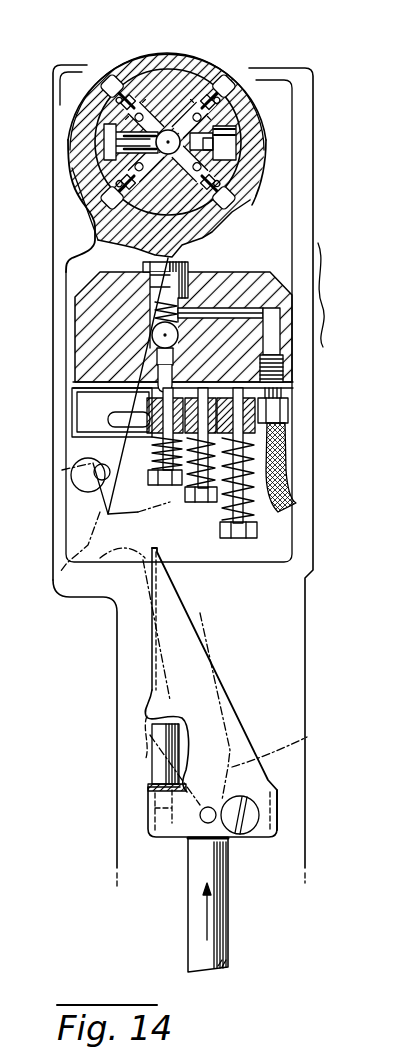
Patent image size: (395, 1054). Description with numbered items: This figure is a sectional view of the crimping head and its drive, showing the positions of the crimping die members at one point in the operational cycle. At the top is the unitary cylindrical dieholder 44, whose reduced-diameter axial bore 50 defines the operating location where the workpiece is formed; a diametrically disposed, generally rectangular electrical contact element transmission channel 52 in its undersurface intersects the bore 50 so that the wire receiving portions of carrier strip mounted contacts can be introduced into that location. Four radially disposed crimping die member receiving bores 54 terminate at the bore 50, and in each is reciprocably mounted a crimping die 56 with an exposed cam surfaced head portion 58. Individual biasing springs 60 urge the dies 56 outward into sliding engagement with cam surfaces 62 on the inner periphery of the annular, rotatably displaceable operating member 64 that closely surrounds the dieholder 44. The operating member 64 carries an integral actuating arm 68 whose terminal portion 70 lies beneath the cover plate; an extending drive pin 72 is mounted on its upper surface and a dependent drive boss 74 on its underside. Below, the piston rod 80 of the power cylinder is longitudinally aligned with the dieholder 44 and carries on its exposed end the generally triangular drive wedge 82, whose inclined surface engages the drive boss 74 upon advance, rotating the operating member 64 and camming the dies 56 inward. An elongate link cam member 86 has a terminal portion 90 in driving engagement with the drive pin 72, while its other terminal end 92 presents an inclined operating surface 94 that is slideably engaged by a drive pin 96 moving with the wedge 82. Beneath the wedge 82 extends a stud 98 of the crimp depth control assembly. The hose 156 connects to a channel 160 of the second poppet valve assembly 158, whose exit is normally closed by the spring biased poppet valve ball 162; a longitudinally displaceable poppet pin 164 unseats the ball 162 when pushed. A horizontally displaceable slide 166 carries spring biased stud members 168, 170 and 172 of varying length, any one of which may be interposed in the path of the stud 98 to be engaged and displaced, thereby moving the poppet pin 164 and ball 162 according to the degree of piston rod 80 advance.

The dieholder 44 is at (232, 73).
The axial bore 50 is at (172, 132).
The electrical contact element transmission channel 52 is at (118, 144).
The crimping die member receiving bores 54 is at (110, 128).
The crimping die 56 is at (145, 113).
The cam surfaced head portion 58 is at (222, 83).
The biasing springs 60 is at (137, 88).
The cam surfaces 62 is at (108, 90).
The operating member 64 is at (192, 83).
The actuating arm 68 is at (100, 253).
The terminal portion 70 is at (72, 428).
The drive pin 72 is at (95, 481).
The drive boss 74 is at (84, 458).
The piston rod 80 is at (226, 927).
The drive wedge 82 is at (224, 697).
The link cam member 86 is at (108, 592).
The terminal portion 90 is at (60, 572).
The terminal end 92 is at (203, 797).
The inclined operating surface 94 is at (307, 737).
The drive pin 96 is at (247, 833).
The stud 98 is at (155, 765).
The hose 156 is at (284, 453).
The second poppet valve assembly 158 is at (192, 272).
The channel 160 is at (258, 305).
The poppet valve ball 162 is at (178, 333).
The poppet pin 164 is at (178, 377).
The slide 166 is at (288, 416).
The stud member 168 is at (163, 484).
The stud member 170 is at (197, 507).
The stud member 172 is at (240, 540).